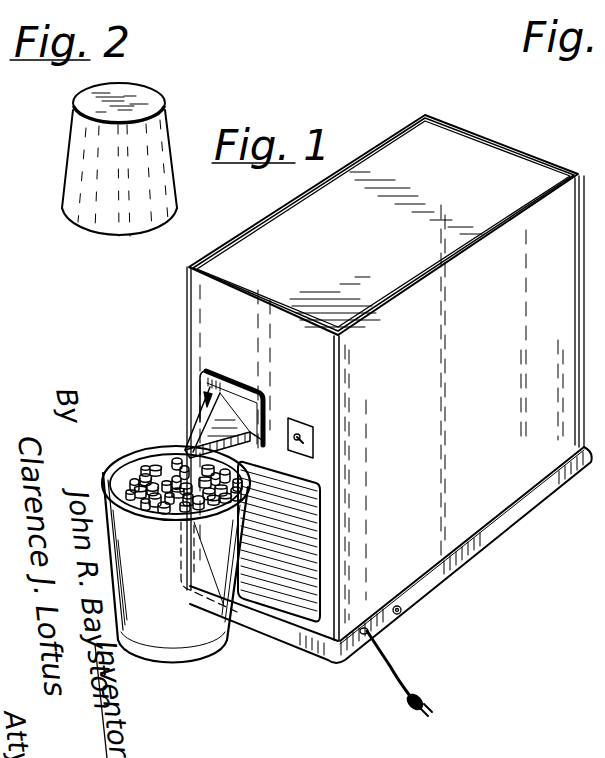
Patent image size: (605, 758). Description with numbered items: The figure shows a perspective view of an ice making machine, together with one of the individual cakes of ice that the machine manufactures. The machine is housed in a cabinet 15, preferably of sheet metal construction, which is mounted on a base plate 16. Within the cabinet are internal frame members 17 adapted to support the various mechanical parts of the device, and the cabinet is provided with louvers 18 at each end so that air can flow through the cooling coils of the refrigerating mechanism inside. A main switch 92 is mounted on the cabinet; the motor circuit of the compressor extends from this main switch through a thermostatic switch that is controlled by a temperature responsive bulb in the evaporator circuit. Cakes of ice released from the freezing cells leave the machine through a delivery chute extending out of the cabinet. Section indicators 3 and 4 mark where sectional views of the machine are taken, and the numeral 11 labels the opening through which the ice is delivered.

The section line 3- 3 is at (400, 110).
The section line 4- 4 is at (590, 170).
The dispensing opening 11 is at (208, 381).
The cabinet 15 is at (490, 436).
The base plate 16 is at (483, 543).
The internal frame members 17 is at (187, 432).
The louvers 18 is at (290, 590).
The main switch 92 is at (298, 428).